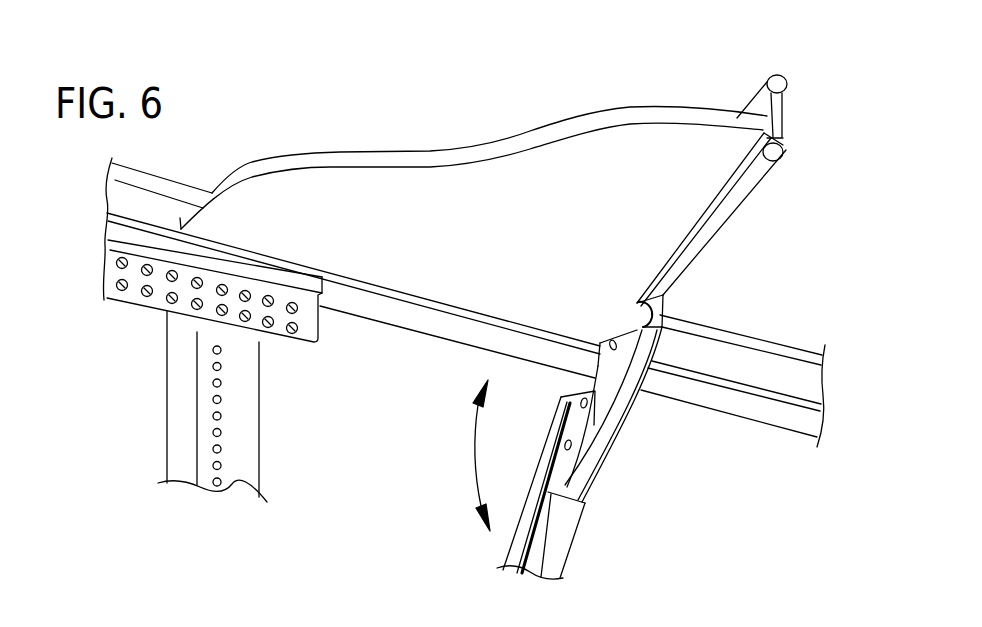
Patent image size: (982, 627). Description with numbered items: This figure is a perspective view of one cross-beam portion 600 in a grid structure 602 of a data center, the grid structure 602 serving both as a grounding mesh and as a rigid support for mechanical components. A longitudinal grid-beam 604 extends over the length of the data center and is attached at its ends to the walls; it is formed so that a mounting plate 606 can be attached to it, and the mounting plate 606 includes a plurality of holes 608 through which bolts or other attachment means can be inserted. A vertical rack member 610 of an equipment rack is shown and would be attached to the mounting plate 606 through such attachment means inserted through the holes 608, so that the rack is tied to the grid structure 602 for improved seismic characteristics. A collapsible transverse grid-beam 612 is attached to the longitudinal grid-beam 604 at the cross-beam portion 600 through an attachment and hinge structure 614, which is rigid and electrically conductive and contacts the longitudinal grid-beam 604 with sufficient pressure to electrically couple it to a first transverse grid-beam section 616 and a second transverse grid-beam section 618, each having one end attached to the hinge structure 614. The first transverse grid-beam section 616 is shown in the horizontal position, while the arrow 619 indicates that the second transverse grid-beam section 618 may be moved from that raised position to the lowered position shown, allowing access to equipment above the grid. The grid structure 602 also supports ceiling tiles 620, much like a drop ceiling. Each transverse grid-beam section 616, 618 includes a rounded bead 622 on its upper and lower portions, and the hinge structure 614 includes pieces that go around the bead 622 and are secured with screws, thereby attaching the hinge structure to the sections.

The cross-beam portion 600 is at (663, 432).
The grid structure 602 is at (295, 100).
The longitudinal grid-beam 604 is at (760, 336).
The mounting plate 606 is at (313, 343).
The holes 608 is at (143, 296).
The vertical rack member 610 is at (260, 455).
The collapsible transverse grid-beam 612 is at (788, 195).
The attachment and hinge structure 614 is at (600, 477).
The first transverse grid-beam section 616 is at (788, 110).
The second transverse grid-beam section 618 is at (568, 547).
The arrow 619 is at (470, 458).
The ceiling tiles 620 is at (528, 136).
The bead 622 is at (770, 77).